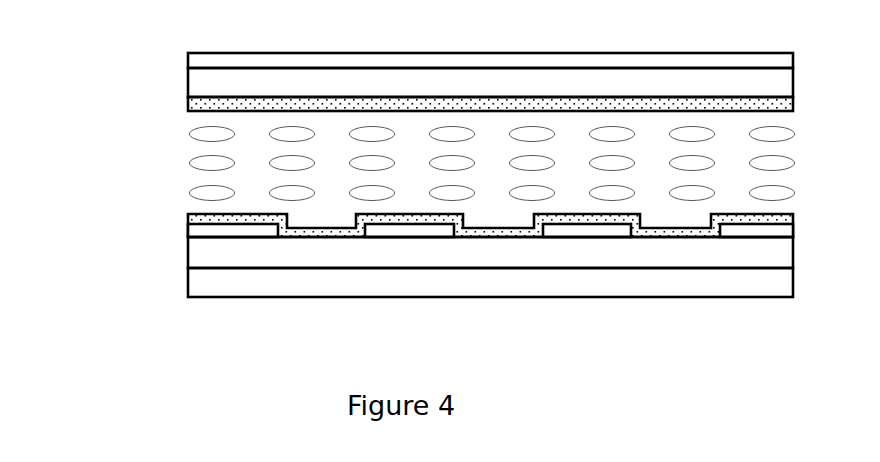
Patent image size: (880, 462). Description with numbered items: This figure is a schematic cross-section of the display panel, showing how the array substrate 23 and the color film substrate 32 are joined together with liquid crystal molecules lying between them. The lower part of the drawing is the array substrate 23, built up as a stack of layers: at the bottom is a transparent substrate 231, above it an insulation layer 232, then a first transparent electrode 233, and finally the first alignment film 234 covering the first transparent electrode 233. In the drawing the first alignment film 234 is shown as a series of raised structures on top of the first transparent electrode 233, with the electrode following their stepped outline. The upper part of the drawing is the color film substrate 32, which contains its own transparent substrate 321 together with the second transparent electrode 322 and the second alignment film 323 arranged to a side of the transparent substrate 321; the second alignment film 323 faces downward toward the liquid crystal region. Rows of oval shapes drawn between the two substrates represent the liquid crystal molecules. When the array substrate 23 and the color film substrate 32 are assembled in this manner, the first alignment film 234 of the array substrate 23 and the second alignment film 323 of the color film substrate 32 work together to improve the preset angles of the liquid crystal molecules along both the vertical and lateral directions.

The color film substrate 32 is at (75, 40).
The second transparent electrode 322 is at (223, 58).
The transparent substrate 321 is at (218, 82).
The second alignment film 323 is at (238, 107).
The array substrate 23 is at (75, 172).
The first alignment film 234 is at (260, 215).
The first transparent electrode 233 is at (227, 230).
The insulation layer 232 is at (218, 253).
The transparent substrate 231 is at (223, 282).